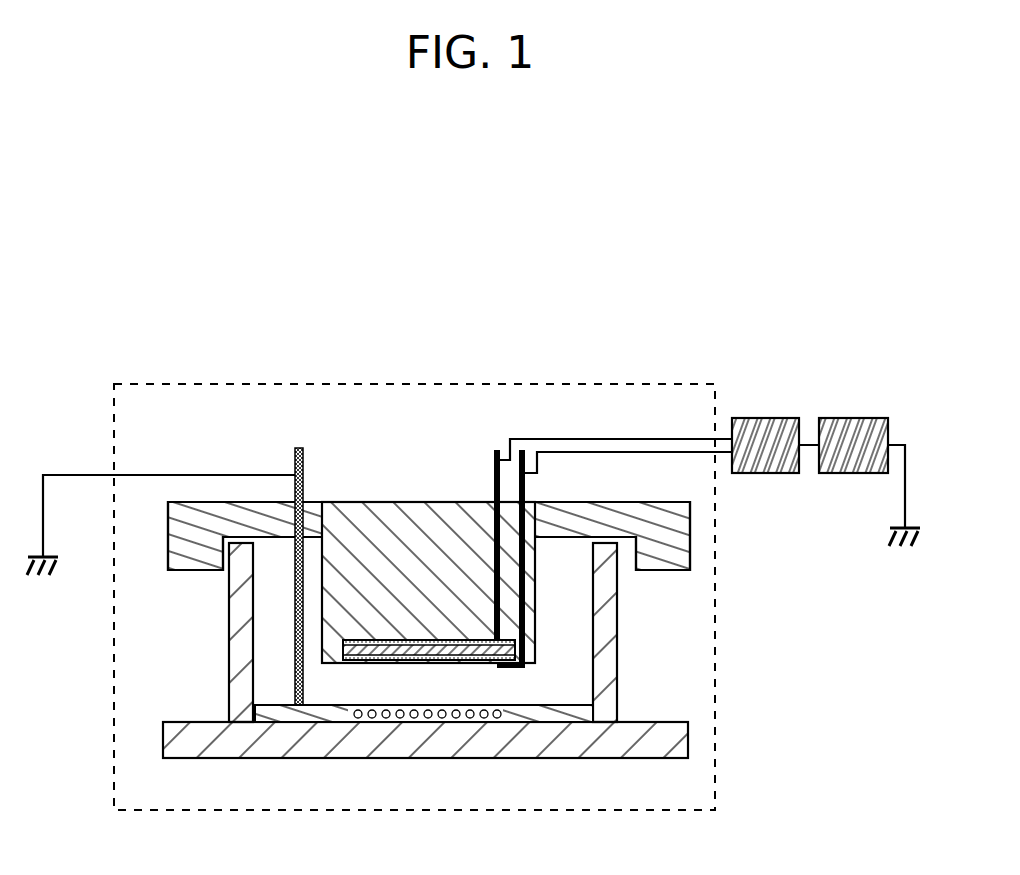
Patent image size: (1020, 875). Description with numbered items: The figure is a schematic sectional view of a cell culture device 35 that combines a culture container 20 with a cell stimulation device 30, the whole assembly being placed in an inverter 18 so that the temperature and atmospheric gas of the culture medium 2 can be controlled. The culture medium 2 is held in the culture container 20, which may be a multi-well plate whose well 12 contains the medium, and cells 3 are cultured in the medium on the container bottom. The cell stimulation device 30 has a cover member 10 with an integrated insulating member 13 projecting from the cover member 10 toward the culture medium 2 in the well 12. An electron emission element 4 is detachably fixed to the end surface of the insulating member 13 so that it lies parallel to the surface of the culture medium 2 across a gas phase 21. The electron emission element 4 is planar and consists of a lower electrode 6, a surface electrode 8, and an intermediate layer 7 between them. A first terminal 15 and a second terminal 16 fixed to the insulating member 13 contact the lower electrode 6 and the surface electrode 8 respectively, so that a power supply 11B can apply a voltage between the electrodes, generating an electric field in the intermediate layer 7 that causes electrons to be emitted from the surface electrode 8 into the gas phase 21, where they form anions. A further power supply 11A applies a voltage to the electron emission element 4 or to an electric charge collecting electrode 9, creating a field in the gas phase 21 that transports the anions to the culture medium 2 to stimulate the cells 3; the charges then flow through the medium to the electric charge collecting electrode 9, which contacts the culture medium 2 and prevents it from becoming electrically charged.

The cell culture device 35 is at (649, 341).
The inverter 18 is at (715, 690).
The cover member 10 is at (208, 520).
The second terminal 16 is at (517, 518).
The insulating member 13 is at (463, 587).
The cell stimulation device 30 is at (327, 492).
The electron emission element 4 is at (427, 494).
The lower electrode 6 is at (373, 645).
The intermediate layer 7 is at (395, 650).
The surface electrode 8 is at (420, 657).
The electric charge collecting electrode 9 is at (297, 672).
The first terminal 15 is at (496, 478).
The power supply 11A is at (848, 438).
The power supply 11B is at (765, 435).
The gas phase 21 is at (368, 687).
The well 12 is at (565, 678).
The culture container 20 is at (375, 742).
The culture medium 2 is at (558, 715).
The cells 3 is at (425, 722).